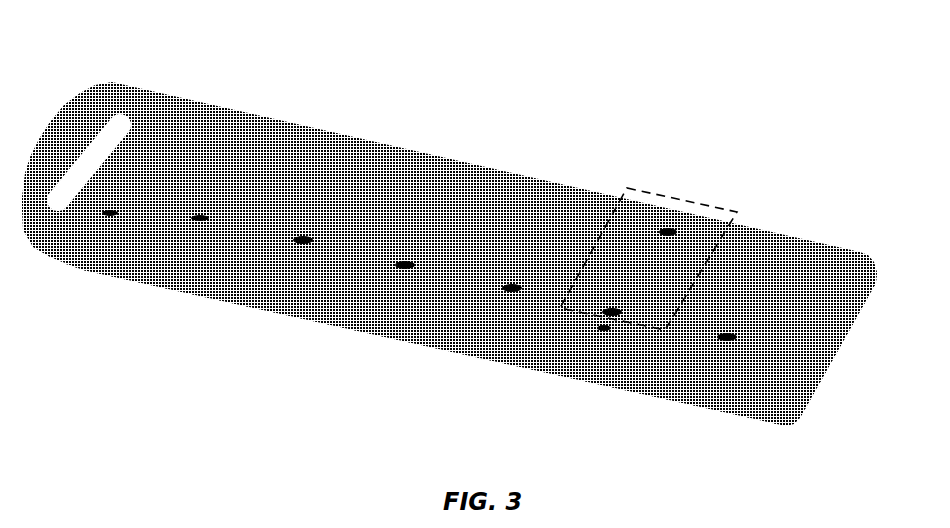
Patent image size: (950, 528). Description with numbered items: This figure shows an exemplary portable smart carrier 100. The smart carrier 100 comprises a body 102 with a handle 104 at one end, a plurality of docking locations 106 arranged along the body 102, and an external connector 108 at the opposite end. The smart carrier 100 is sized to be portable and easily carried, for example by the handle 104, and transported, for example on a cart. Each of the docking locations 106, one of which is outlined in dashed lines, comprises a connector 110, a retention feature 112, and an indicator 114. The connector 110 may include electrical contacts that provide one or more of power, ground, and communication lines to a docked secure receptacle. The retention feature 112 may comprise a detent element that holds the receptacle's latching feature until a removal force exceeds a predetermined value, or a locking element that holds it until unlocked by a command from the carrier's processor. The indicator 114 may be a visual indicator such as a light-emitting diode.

The portable smart carrier 100 is at (321, 66).
The body 102 is at (327, 303).
The handle 104 is at (79, 113).
The docking locations 106 is at (695, 198).
The external connector 108 is at (855, 300).
The connector 110 is at (613, 310).
The retention feature 112 is at (665, 228).
The indicator 114 is at (605, 331).